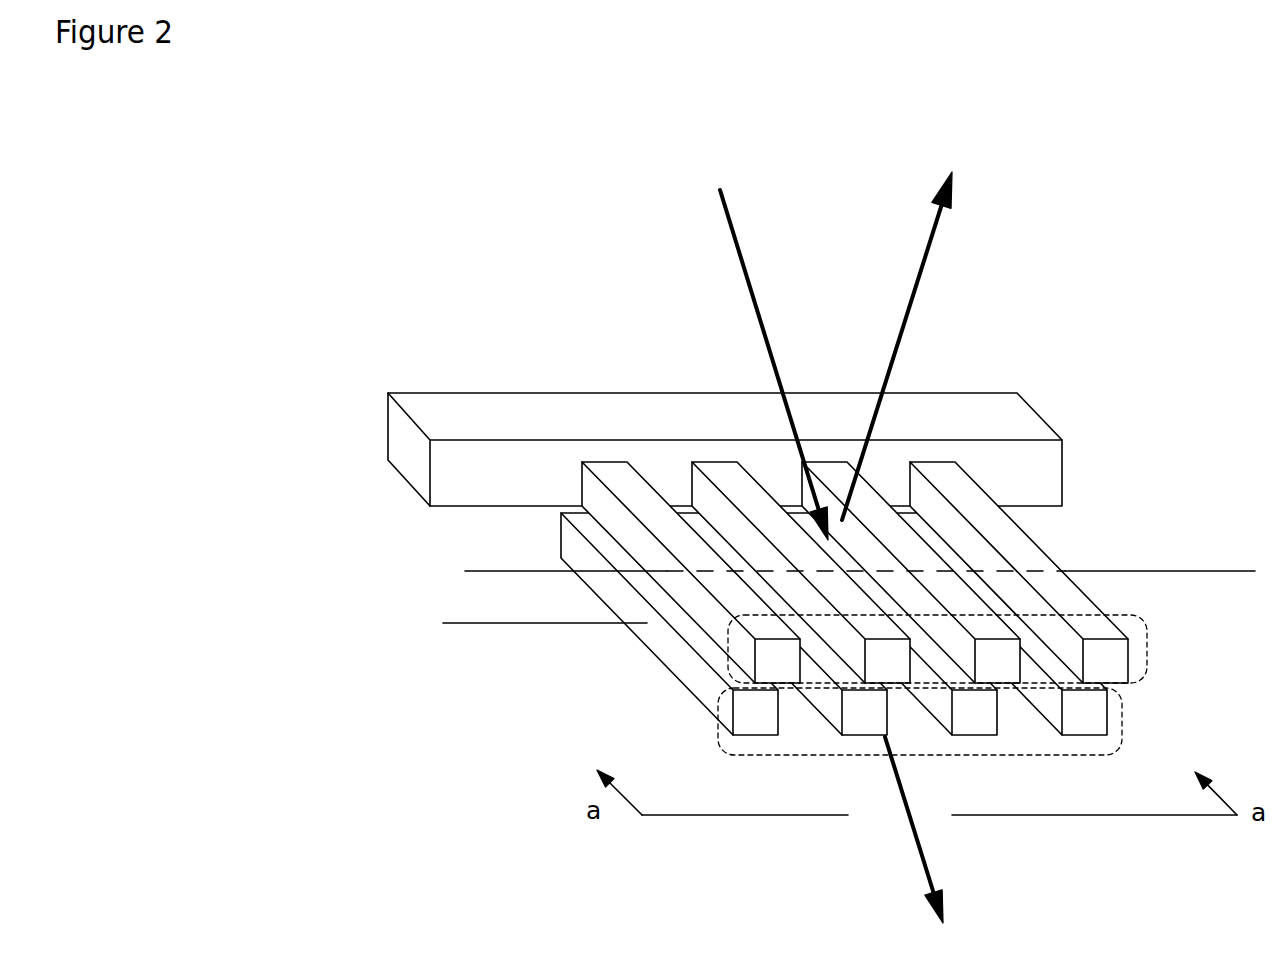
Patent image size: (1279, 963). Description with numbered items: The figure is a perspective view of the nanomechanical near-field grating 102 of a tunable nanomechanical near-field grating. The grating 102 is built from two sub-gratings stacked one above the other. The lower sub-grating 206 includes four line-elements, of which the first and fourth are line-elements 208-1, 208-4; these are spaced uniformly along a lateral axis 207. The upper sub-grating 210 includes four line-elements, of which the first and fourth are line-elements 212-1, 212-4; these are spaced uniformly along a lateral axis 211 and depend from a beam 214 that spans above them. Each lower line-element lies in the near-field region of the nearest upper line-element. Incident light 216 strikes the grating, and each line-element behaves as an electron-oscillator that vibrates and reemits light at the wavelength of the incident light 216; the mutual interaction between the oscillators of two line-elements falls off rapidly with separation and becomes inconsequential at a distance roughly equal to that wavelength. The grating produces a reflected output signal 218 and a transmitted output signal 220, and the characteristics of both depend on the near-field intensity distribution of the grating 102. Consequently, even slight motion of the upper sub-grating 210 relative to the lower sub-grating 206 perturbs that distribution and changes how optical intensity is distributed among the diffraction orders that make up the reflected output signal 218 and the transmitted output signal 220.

The nanomechanical near-field grating 102 is at (493, 302).
The sub-grating 206 is at (900, 653).
The lateral axis 207 is at (500, 626).
The line-element 208-1 is at (703, 682).
The line-element 208-4 is at (1083, 705).
The sub-grating 210 is at (897, 515).
The lateral axis 211 is at (507, 571).
The line-element 212-1 is at (627, 483).
The line-element 212-4 is at (1030, 570).
The beam 214 is at (530, 478).
The incident light 216 is at (750, 273).
The reflected output signal 218 is at (922, 287).
The transmitted output signal 220 is at (900, 802).